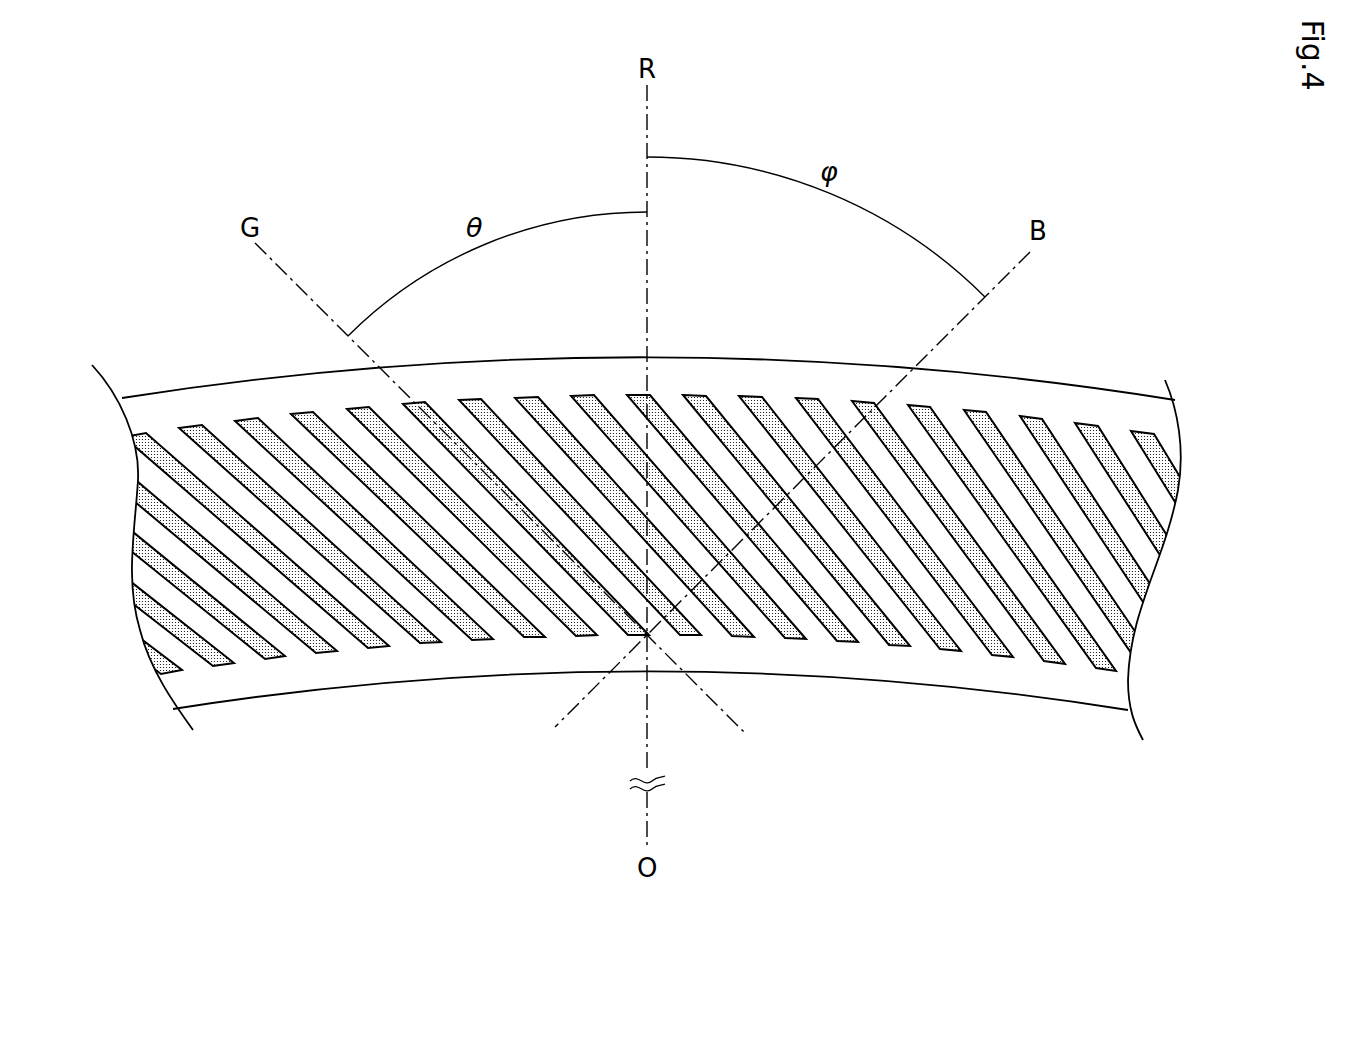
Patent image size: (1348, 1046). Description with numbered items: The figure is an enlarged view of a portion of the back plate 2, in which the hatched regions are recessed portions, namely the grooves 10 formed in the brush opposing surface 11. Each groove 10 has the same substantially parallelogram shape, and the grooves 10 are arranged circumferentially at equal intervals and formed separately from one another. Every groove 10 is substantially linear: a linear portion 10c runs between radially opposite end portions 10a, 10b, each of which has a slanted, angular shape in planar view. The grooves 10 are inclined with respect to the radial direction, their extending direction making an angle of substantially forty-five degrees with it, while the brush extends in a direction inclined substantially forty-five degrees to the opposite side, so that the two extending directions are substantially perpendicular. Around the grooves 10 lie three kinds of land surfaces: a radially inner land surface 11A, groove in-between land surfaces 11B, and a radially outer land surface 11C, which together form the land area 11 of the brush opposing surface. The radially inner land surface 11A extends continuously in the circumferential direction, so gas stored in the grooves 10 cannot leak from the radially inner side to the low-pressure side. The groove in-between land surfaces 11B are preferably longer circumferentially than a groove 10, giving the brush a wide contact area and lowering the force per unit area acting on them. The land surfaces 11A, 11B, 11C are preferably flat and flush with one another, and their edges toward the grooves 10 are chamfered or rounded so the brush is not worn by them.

The back plate 2 is at (178, 375).
The groove 10 is at (660, 553).
The radially opposite end portion 10a is at (784, 521).
The radially opposite end portion 10b is at (898, 647).
The linear portion 10c is at (758, 463).
The brush opposing surface 11 is at (246, 634).
The radially inner land surface 11A is at (242, 780).
The groove in-between land surface 11B is at (350, 600).
The radially outer land surface 11C is at (272, 655).